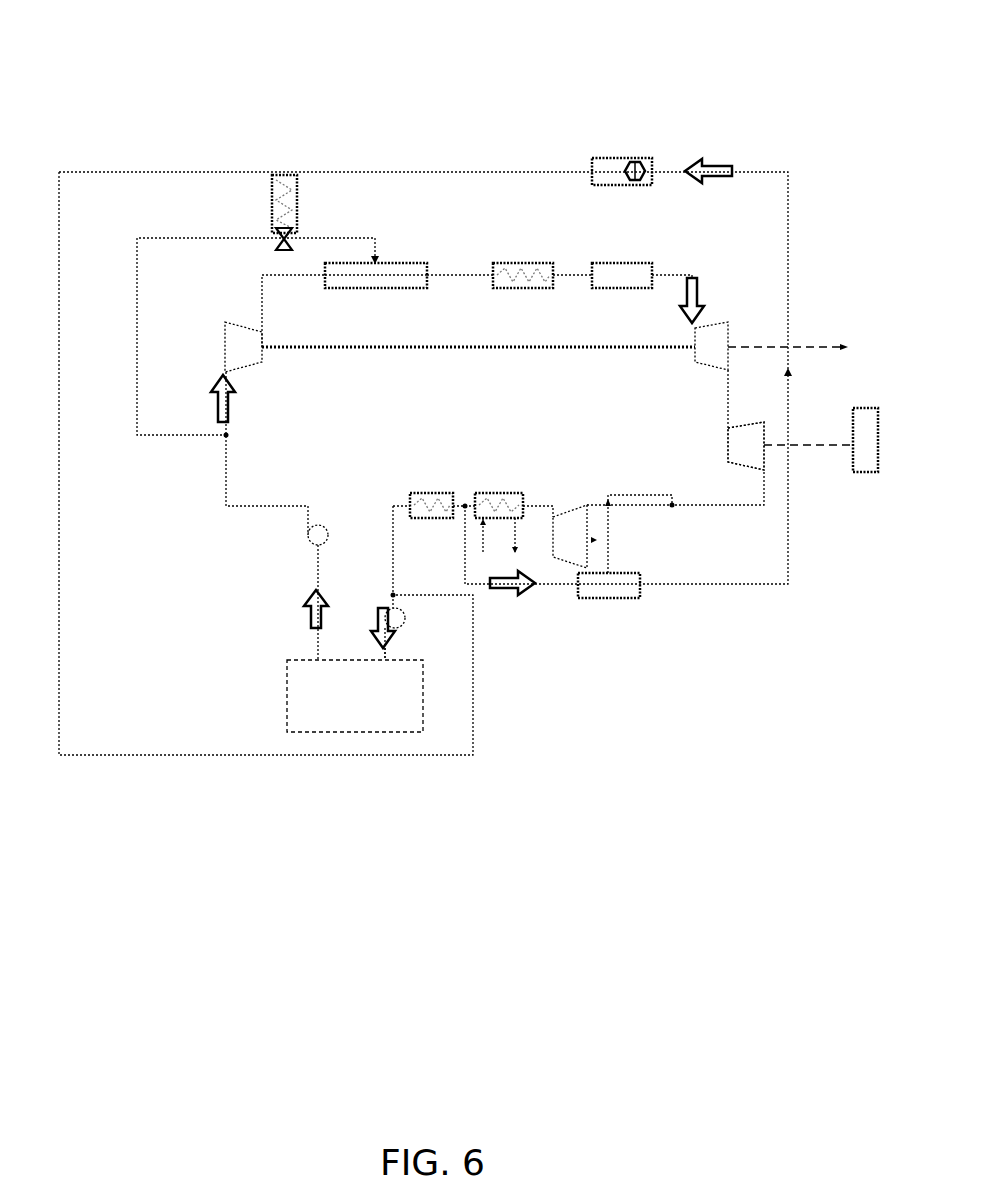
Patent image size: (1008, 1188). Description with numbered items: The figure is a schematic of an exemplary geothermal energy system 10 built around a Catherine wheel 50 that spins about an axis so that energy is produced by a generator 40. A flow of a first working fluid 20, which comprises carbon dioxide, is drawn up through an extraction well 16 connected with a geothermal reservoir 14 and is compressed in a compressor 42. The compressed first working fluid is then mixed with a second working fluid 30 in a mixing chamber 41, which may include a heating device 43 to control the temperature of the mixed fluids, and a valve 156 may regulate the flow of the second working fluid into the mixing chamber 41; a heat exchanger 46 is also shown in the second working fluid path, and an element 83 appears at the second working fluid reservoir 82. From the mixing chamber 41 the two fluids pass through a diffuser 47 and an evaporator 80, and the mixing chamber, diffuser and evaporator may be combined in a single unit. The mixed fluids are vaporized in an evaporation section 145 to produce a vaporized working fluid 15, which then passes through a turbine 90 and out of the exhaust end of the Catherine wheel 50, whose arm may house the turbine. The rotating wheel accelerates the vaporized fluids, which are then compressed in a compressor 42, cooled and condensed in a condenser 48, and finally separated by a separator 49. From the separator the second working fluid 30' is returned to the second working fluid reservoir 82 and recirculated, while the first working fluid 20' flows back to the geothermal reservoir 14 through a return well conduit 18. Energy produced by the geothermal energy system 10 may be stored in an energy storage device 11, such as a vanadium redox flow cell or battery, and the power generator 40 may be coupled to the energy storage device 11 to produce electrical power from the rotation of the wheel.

The geothermal energy system 10 is at (272, 107).
The heat exchanger 46 is at (285, 174).
The valve 156 is at (284, 250).
The mixing chamber 41 is at (405, 265).
The heating device 43 is at (405, 270).
The diffuser 47 is at (525, 270).
The evaporator 80 is at (607, 272).
The second working fluid reservoir 82 is at (607, 172).
The fuel pump 83 is at (636, 164).
The second working fluid 30 is at (725, 137).
The evaporation section 145 is at (652, 248).
The vaporized working fluid 15 is at (700, 286).
The turbine 90 is at (710, 340).
The energy storage device 11 is at (862, 432).
The generator 40 is at (768, 442).
The Catherine wheel 50 is at (738, 440).
The compressor 42 is at (245, 343).
The first working fluid 20 is at (270, 398).
The separator 49 is at (432, 500).
The condenser 48 is at (498, 500).
The extraction well 16 is at (308, 606).
The geothermal reservoir 14 is at (288, 695).
The first working fluid 20' is at (374, 597).
The return well conduit 18 is at (388, 640).
The second working fluid 30' is at (535, 621).